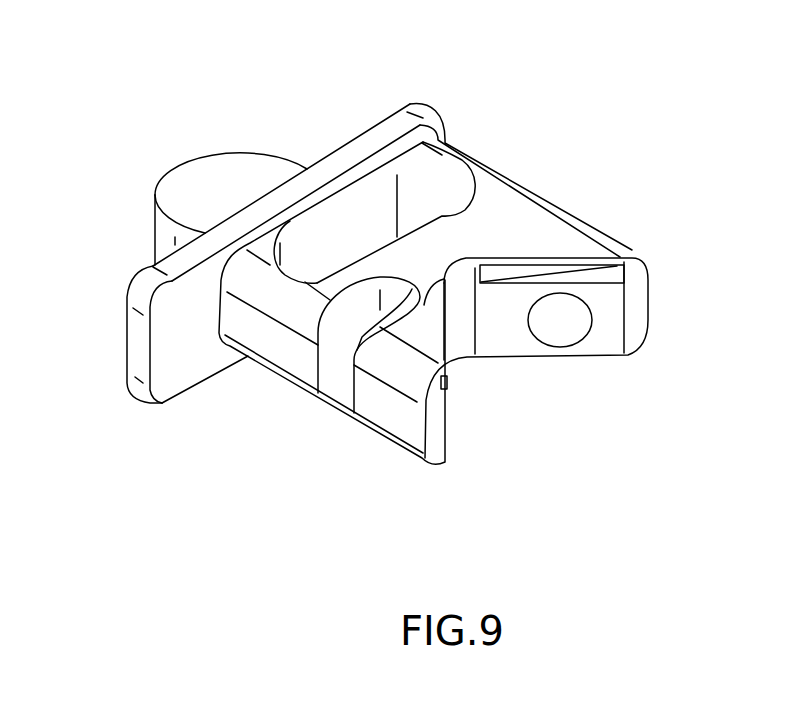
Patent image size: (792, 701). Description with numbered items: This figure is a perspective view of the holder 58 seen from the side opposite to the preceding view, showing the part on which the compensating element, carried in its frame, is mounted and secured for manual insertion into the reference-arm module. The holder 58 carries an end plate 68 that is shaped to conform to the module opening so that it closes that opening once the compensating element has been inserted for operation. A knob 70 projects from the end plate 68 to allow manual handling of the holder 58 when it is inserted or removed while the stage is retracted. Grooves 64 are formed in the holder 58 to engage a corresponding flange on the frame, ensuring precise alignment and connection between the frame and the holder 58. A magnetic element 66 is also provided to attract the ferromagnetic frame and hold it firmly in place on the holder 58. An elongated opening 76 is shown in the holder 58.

The holder 58 is at (553, 160).
The grooves 64 is at (618, 266).
The magnetic element 66 is at (566, 333).
The end plate 68 is at (143, 288).
The knob 70 is at (213, 178).
The elongated opening 76 is at (445, 183).